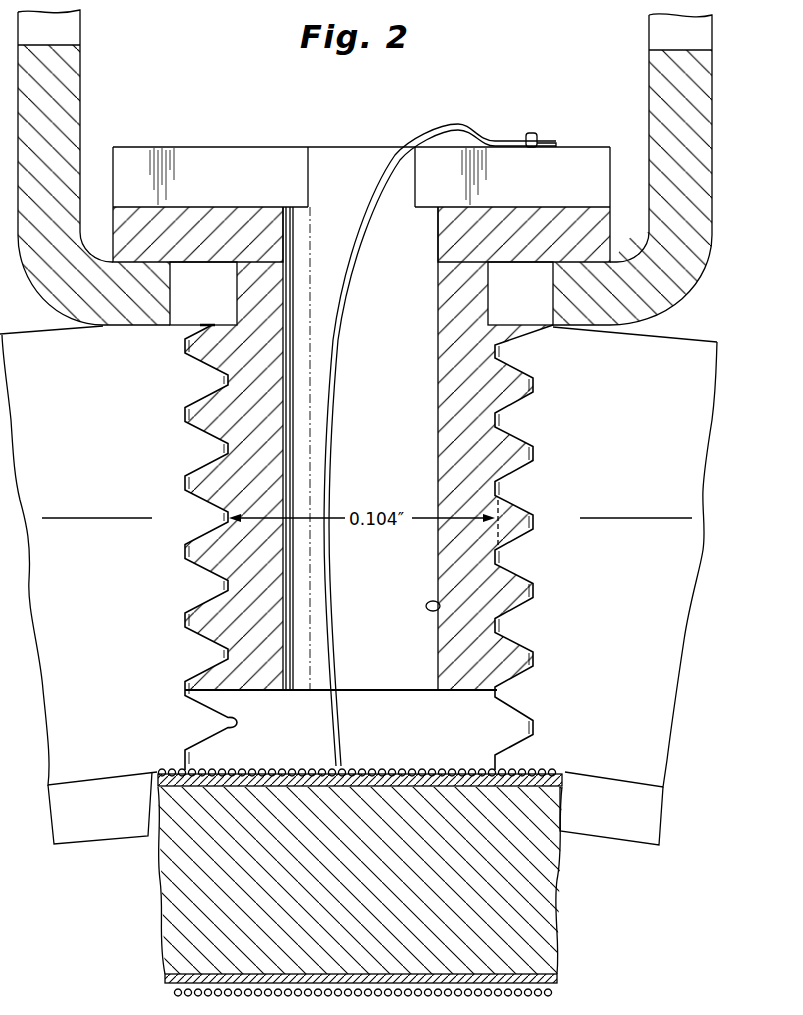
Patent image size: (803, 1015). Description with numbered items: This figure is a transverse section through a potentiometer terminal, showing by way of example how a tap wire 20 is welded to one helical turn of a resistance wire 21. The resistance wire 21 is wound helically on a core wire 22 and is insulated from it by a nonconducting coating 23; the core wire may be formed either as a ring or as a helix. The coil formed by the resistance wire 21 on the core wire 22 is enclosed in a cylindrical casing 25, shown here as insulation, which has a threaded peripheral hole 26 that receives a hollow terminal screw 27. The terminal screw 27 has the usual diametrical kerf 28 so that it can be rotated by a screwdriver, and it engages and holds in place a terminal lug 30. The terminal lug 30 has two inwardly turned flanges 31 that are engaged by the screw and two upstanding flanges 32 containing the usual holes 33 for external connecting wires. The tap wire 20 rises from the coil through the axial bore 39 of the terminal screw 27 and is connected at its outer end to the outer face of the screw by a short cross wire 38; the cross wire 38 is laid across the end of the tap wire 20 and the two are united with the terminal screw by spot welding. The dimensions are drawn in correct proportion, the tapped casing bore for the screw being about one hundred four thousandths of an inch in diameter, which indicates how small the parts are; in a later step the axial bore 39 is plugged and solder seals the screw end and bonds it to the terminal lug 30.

The tap wire 20 is at (346, 288).
The resistance wire 21 is at (372, 766).
The core wire 22 is at (160, 897).
The nonconducting coating 23 is at (440, 770).
The cylindrical casing 25 is at (358, 585).
The peripheral hole 26 is at (222, 722).
The hollow terminal screw 27 is at (356, 143).
The diametrical kerf 28 is at (205, 160).
The terminal lug 30 is at (365, 188).
The inwardly turned flanges 31 is at (153, 326).
The upstanding flanges 32 is at (73, 92).
The holes 33 is at (72, 47).
The cross wire 38 is at (538, 137).
The axial bore 39 is at (440, 604).